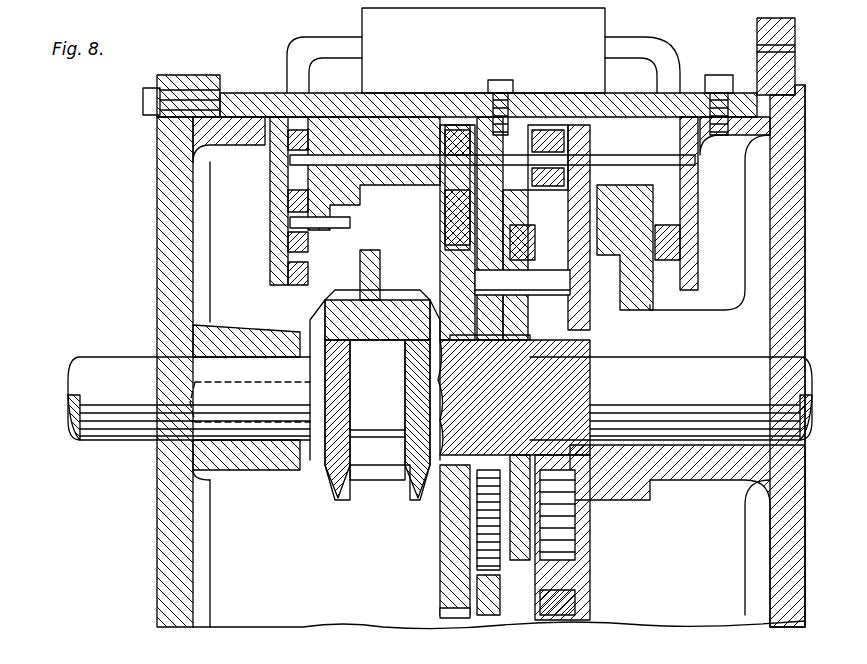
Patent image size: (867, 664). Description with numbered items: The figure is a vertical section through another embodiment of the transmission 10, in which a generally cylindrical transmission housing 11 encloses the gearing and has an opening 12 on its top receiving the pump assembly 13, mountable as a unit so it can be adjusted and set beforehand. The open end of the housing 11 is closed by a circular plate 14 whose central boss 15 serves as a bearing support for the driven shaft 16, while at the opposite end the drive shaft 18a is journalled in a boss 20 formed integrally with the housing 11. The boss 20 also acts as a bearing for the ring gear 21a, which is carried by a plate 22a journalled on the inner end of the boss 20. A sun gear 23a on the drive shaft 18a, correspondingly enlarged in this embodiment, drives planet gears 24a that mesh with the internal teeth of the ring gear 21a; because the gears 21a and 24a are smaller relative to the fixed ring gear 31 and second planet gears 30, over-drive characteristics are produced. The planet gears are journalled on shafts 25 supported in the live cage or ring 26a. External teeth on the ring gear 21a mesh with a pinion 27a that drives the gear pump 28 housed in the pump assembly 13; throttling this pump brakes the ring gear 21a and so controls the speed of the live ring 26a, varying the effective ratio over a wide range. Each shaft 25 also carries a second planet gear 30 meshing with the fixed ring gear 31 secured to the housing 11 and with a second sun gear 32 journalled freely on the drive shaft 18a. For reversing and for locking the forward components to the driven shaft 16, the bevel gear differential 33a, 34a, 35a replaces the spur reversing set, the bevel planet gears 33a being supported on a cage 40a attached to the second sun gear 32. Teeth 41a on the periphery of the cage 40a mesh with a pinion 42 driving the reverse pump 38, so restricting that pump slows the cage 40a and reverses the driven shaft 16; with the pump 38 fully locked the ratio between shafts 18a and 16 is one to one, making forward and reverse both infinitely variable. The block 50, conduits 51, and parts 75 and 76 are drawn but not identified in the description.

The preferred embodiment 10 is at (444, 323).
The transmission housing 11 is at (790, 292).
The opening 12 is at (270, 148).
The pump assembly 13 is at (318, 95).
The circular plate 14 is at (195, 272).
The boss 15 is at (256, 328).
The driven shaft 16 is at (145, 394).
The drive shaft 18a is at (745, 394).
The boss 20 is at (700, 486).
The ring gear 21a is at (545, 212).
The plate 22a is at (590, 540).
The sun gear 23a is at (590, 382).
The planet gear 24a is at (590, 282).
The shaft 25 is at (522, 282).
The live cage or ring 26a is at (535, 340).
The pinion 27a is at (543, 137).
The gear pump 28 is at (700, 110).
The second planet gear 30 is at (522, 241).
The fixed ring gear 31 is at (490, 205).
The second sun gear 32 is at (490, 345).
The bevel planet gear 33a is at (377, 395).
The bevel ring gear 34a is at (340, 378).
The bevel sun gear 35a is at (395, 432).
The reverse pump 38 is at (272, 184).
The ring or cage 40a is at (440, 212).
The teeth 41a is at (440, 613).
The pinion 42 is at (455, 130).
The motor block 50 is at (605, 30).
The conduit 51 is at (296, 46).
The bearing plate 75 is at (698, 170).
The pin 76 is at (290, 222).